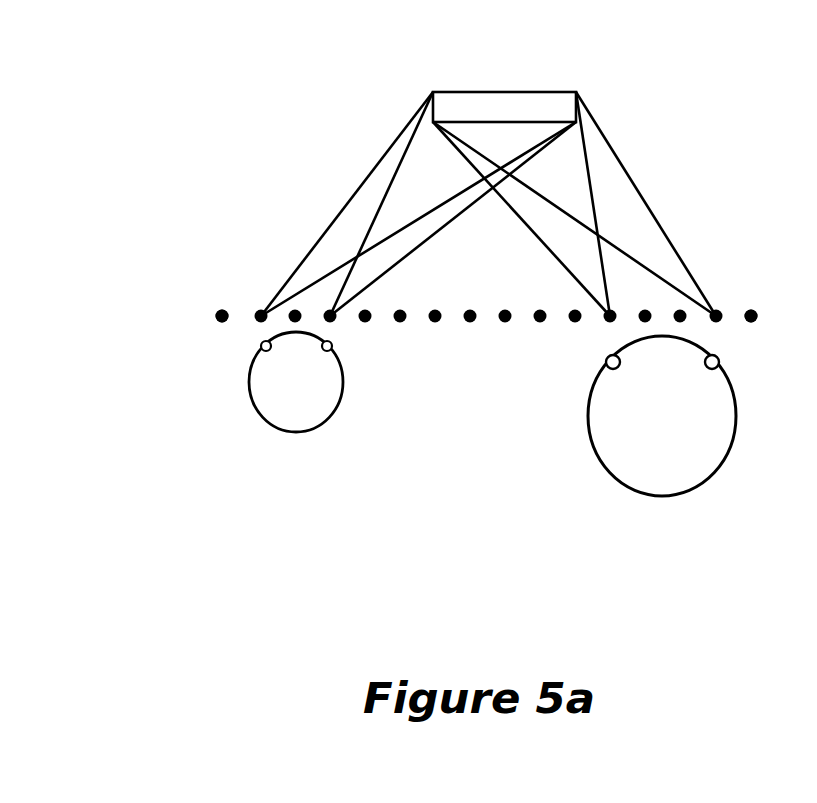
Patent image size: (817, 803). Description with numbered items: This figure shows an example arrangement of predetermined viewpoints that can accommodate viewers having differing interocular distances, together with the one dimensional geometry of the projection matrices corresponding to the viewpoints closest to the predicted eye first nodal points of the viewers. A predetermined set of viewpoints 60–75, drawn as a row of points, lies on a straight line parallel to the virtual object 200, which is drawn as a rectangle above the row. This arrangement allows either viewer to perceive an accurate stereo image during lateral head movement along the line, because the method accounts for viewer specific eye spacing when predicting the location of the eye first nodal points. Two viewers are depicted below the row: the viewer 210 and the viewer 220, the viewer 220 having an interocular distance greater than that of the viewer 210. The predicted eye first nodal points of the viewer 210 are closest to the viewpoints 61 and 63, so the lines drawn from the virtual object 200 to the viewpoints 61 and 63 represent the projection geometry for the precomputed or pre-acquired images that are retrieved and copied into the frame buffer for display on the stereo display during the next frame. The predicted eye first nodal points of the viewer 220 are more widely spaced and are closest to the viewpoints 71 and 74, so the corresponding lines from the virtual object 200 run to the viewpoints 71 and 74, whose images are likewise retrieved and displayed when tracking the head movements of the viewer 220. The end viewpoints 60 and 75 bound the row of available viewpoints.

The virtual object 200 is at (552, 83).
The viewpoint 60 is at (212, 310).
The viewpoint 61 is at (256, 303).
The viewpoint 63 is at (345, 325).
The viewpoint 71 is at (602, 327).
The viewpoint 74 is at (727, 307).
The viewpoint 75 is at (762, 308).
The viewer 210 is at (338, 418).
The viewer 220 is at (732, 457).